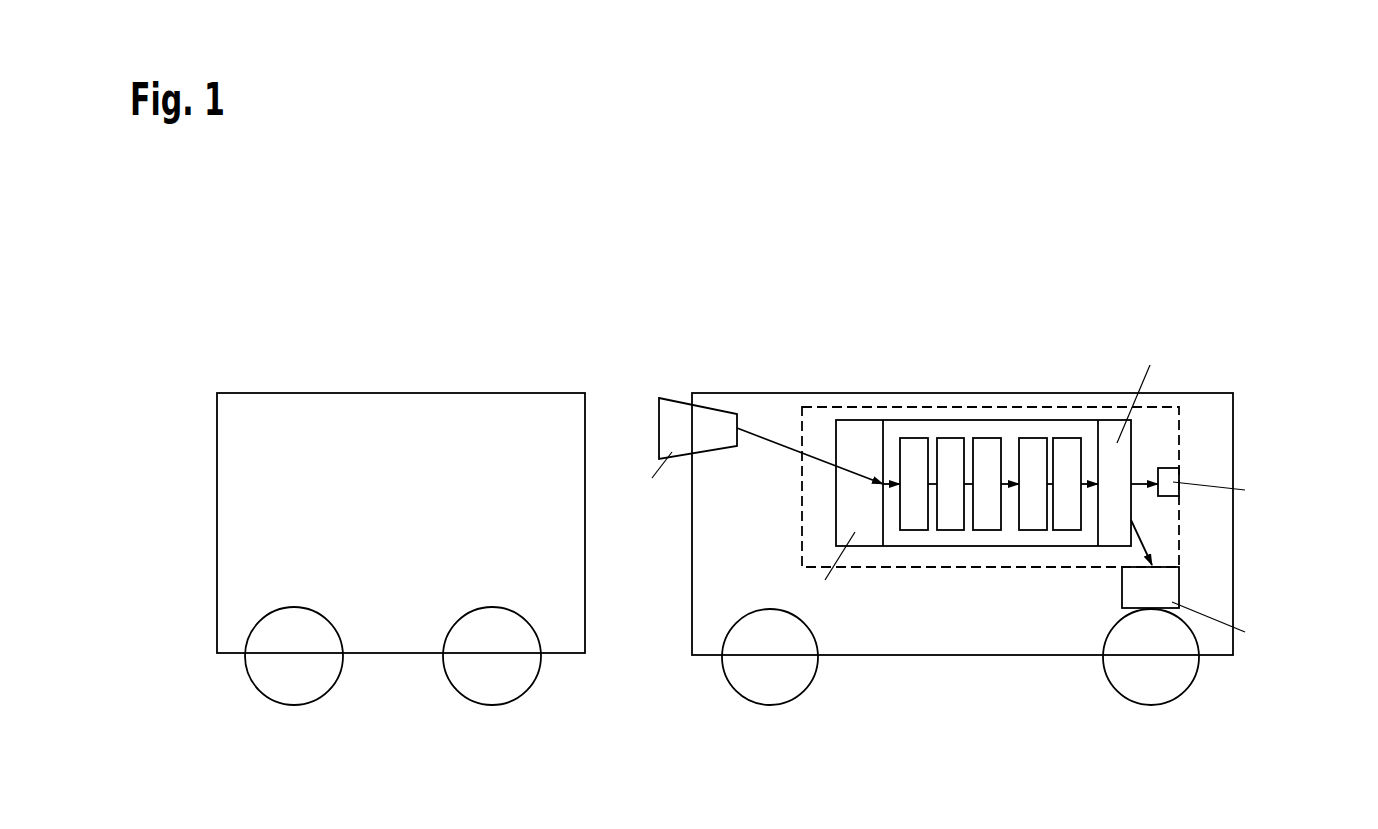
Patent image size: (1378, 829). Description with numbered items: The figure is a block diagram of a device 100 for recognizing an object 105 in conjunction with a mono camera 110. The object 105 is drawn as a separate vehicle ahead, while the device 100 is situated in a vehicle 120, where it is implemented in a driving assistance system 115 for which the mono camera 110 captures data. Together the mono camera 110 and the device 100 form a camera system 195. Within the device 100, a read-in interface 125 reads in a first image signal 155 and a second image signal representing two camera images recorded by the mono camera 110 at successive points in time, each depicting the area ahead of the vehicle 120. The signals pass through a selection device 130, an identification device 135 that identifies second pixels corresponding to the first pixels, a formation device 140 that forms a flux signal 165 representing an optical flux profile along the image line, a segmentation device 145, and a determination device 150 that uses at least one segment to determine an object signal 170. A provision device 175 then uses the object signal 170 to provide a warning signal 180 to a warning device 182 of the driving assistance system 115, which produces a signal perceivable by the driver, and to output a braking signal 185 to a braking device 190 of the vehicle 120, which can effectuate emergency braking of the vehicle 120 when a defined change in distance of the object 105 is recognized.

The device 100 is at (848, 413).
The object 105 is at (399, 392).
The mono camera 110 is at (677, 397).
The driving assistance system 115 is at (903, 568).
The vehicle 120 is at (1200, 393).
The read-in interface 125 is at (863, 417).
The selection device 130 is at (917, 438).
The identification device 135 is at (955, 438).
The formation device 140 is at (988, 438).
The segmentation device 145 is at (1033, 438).
The determination device 150 is at (1070, 438).
The first image signal 155 is at (763, 468).
The flux signal 165 is at (1007, 486).
The object signal 170 is at (1087, 486).
The provision device 175 is at (1115, 420).
The warning signal 180 is at (1139, 482).
The warning device 182 is at (1168, 467).
The braking signal 185 is at (1143, 538).
The braking device 190 is at (1180, 592).
The camera system 195 is at (646, 361).